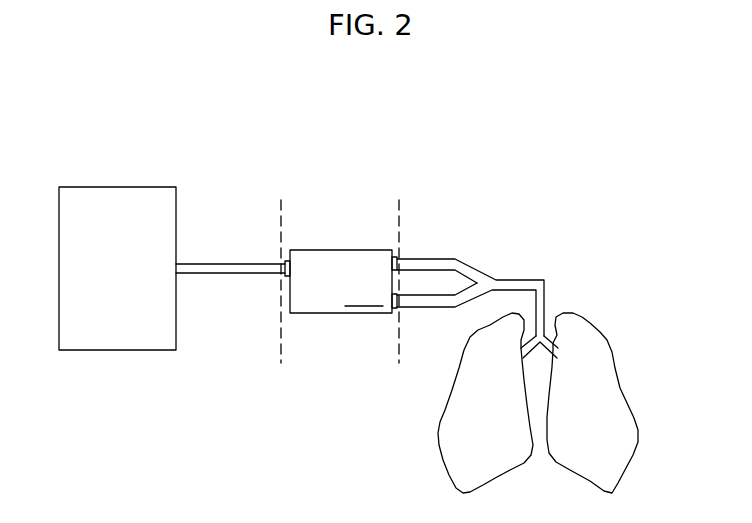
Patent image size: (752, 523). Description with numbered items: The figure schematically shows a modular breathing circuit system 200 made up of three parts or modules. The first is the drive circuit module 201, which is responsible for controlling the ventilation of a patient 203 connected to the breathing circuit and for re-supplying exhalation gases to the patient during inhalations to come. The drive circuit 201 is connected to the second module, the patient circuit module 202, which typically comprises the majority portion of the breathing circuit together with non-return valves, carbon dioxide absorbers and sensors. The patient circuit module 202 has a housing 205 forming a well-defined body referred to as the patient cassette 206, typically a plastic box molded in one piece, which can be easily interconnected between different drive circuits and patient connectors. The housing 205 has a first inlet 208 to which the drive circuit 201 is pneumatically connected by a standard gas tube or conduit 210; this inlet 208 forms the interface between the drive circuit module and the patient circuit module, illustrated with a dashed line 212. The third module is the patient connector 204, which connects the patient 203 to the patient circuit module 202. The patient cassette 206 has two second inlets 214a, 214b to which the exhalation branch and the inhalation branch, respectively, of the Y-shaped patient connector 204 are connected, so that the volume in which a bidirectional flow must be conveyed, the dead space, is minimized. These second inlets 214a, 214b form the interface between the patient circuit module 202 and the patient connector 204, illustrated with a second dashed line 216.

The modular breathing circuit system 200 is at (590, 146).
The drive circuit module 201 is at (107, 160).
The patient circuit module 202 is at (313, 343).
The patient 203 is at (615, 367).
The patient connector 204 is at (523, 255).
The housing 205 is at (325, 314).
The patient cassette 206 is at (364, 295).
The first inlet 208 is at (291, 270).
The gas tube 210 is at (247, 262).
The interface 212 is at (280, 220).
The second inlet 214a is at (418, 260).
The second inlet 214b is at (400, 300).
The interface 216 is at (401, 213).